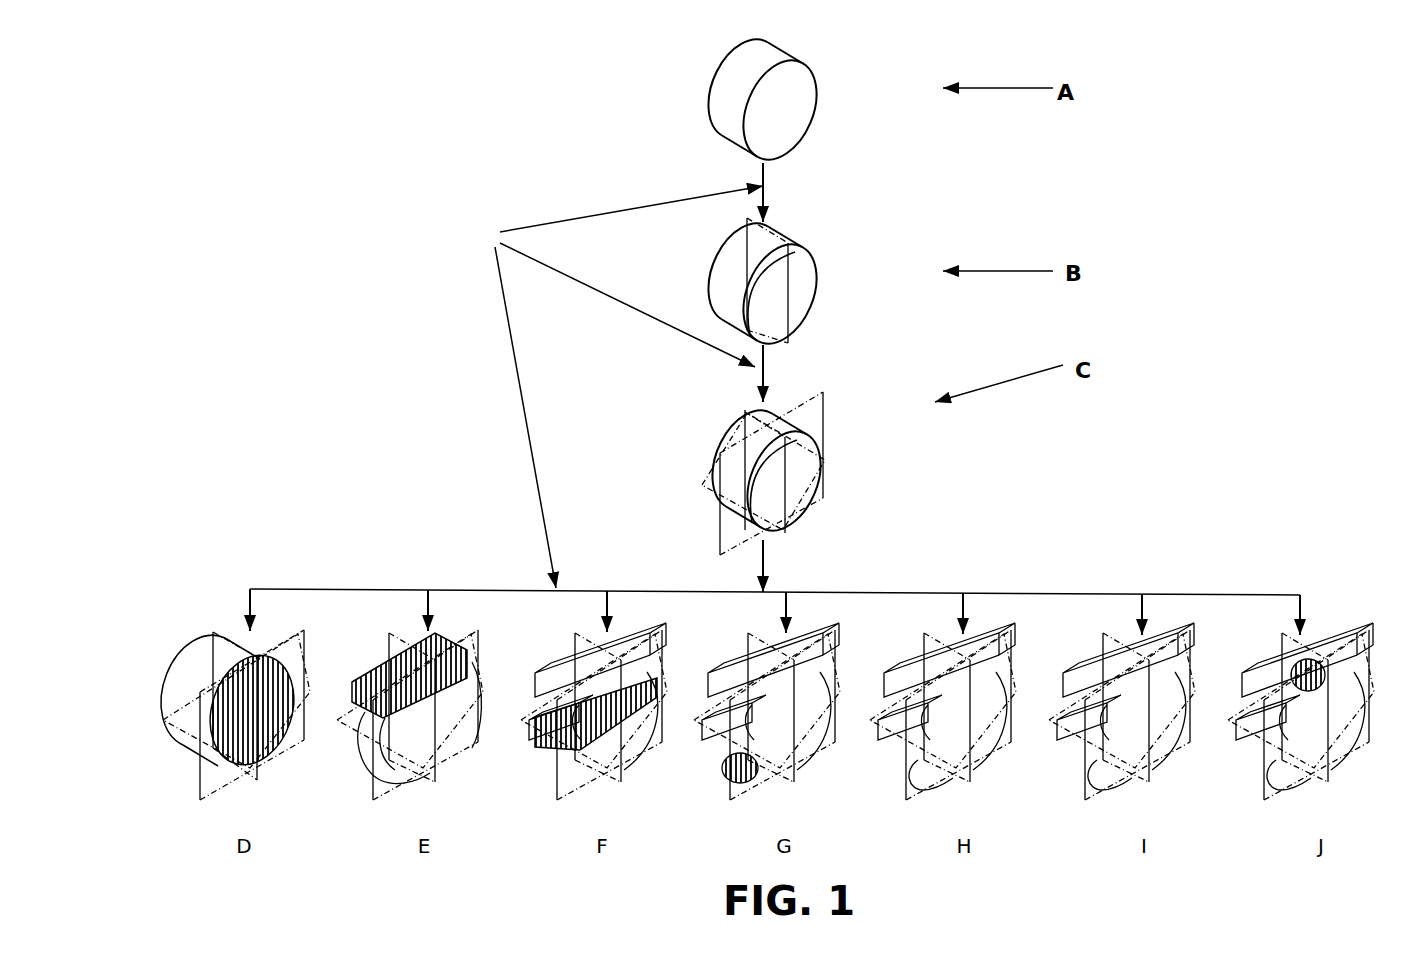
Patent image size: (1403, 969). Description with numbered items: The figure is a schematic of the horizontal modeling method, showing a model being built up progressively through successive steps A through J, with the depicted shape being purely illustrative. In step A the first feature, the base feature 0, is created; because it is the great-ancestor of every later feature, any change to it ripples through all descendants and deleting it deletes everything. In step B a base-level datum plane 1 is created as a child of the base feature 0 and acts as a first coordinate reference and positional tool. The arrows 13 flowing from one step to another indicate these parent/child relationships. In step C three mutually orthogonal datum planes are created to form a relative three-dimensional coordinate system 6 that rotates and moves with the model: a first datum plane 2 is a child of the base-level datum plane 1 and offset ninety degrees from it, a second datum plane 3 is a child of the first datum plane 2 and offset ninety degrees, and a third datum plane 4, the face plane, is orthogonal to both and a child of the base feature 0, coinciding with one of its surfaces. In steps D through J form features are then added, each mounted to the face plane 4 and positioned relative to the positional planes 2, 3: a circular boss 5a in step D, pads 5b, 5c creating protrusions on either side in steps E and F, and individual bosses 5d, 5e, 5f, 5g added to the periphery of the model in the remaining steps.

The base feature 0 is at (818, 106).
The base-level datum plane 1 is at (818, 290).
The first datum plane 2 is at (822, 462).
The second datum plane 3 is at (745, 413).
The third datum plane 4 is at (720, 543).
The three-dimensional coordinate system 6 is at (850, 513).
The arrows 13 is at (612, 387).
The circular boss 5a is at (262, 751).
The pad 5b is at (447, 752).
The pad 5c is at (560, 757).
The boss 5d is at (750, 783).
The boss 5e is at (995, 733).
The boss 5f is at (1128, 773).
The boss 5g is at (1313, 658).